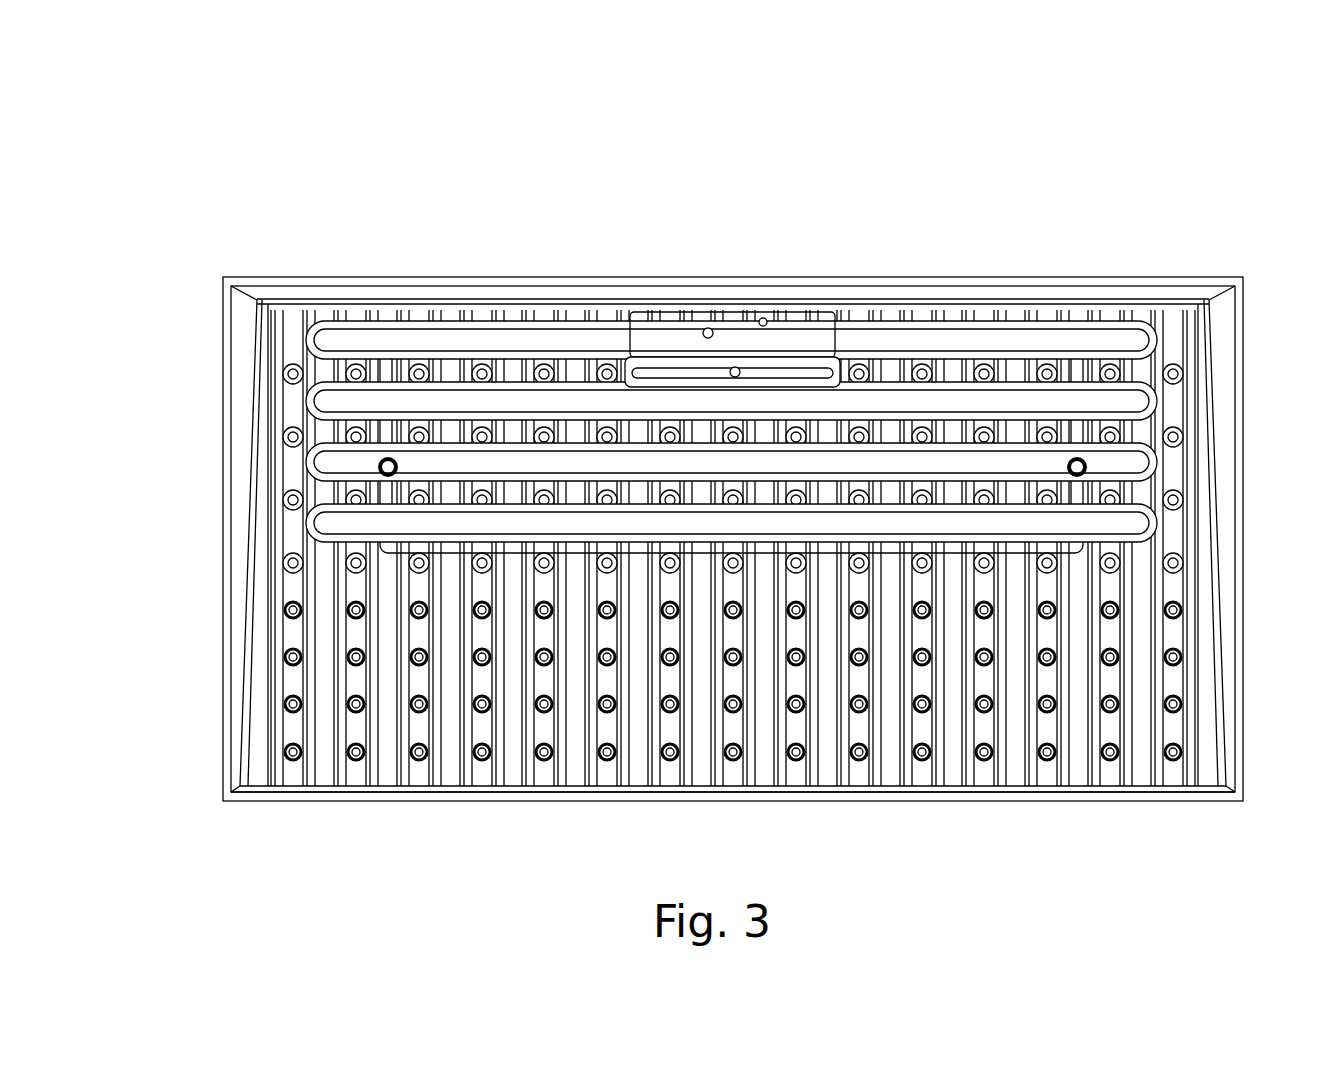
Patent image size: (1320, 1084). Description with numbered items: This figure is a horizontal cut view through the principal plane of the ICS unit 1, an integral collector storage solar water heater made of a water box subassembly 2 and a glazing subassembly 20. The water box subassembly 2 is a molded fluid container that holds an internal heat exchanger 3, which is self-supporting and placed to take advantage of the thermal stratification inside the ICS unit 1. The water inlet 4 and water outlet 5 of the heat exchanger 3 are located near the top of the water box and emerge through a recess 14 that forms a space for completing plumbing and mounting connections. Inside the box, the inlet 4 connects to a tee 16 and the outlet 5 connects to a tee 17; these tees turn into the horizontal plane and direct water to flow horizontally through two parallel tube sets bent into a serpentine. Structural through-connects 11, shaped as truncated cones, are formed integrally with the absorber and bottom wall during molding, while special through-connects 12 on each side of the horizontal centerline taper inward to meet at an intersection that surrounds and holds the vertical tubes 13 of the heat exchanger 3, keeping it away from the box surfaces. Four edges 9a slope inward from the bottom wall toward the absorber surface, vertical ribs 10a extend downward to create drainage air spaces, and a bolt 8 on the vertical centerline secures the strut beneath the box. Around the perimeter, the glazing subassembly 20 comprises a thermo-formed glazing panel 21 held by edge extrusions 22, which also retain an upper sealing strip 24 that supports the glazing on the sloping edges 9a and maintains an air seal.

The ICS unit 1 is at (673, 119).
The water box subassembly 2 is at (553, 292).
The internal heat exchanger 3 is at (820, 350).
The water inlet 4 is at (697, 328).
The water outlet 5 is at (770, 317).
The bolt 8 is at (733, 371).
The edges 9a is at (257, 321).
The vertical ribs 10a is at (837, 758).
The through-connects 11 is at (935, 786).
The special through-connects 12 is at (378, 466).
The vertical tubes 13 is at (387, 407).
The recess 14 is at (797, 343).
The tee 16 is at (707, 330).
The tee 17 is at (763, 325).
The glazing subassembly 20 is at (483, 284).
The glazing panel 21 is at (303, 293).
The edge extrusions 22 is at (431, 283).
The upper sealing strip 24 is at (432, 790).